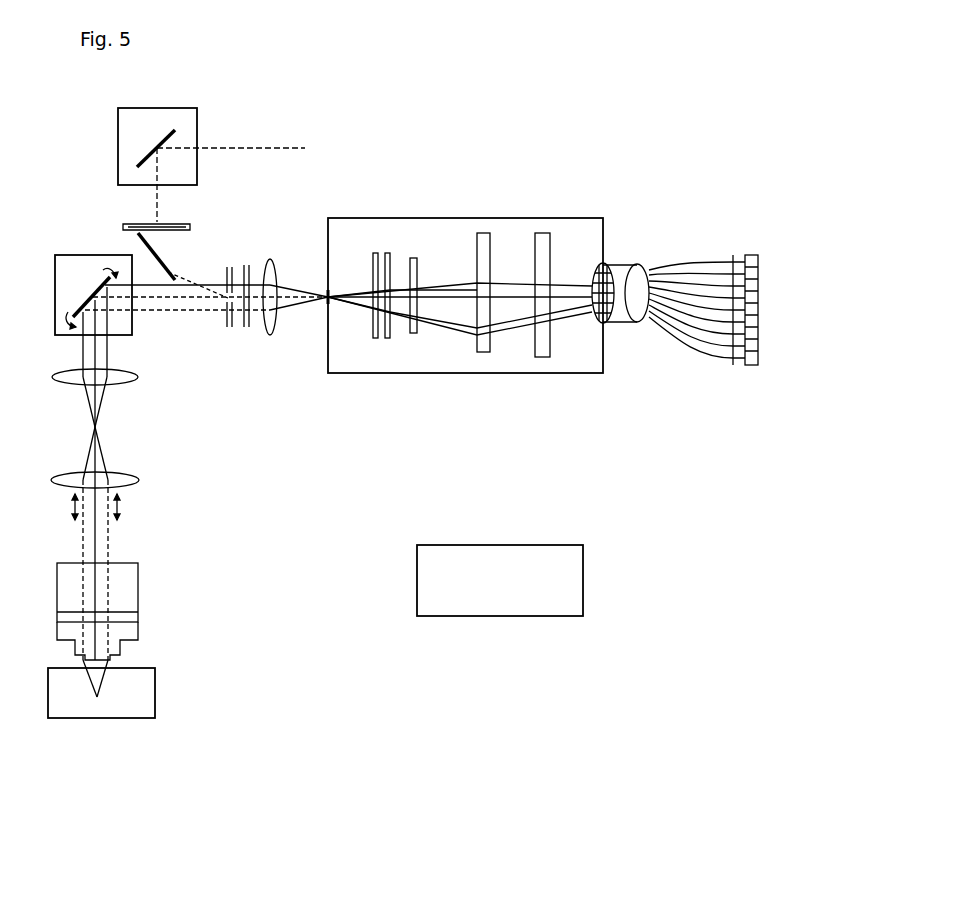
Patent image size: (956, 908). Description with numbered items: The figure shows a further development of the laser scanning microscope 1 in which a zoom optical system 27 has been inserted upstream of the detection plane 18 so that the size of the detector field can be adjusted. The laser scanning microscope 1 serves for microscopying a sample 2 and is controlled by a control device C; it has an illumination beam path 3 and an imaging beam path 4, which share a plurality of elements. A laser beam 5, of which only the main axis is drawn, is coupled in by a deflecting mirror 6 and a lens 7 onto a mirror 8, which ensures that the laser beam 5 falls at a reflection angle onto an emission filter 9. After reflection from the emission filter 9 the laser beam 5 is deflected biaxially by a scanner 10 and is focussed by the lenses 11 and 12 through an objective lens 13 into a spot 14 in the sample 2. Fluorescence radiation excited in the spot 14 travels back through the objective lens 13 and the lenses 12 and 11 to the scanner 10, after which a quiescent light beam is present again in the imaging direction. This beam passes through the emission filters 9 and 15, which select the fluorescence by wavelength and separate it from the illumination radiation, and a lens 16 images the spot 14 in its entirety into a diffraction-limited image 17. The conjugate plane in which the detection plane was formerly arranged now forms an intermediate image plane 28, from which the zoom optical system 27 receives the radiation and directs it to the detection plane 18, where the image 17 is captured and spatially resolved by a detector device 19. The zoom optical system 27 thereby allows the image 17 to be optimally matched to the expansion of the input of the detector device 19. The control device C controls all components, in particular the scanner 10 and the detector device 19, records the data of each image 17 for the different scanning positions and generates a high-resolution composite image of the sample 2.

The laser scanning microscope 1 is at (408, 860).
The sample 2 is at (150, 690).
The illumination beam path 3 is at (104, 213).
The imaging beam path 4 is at (326, 414).
The laser beam 5 is at (270, 148).
The deflecting mirror 6 is at (146, 108).
The lens 7 is at (190, 226).
The mirror 8 is at (135, 242).
The emission filter 9 is at (230, 330).
The scanner 10 is at (130, 325).
The lens 11 is at (140, 380).
The lens 12 is at (140, 482).
The objective lens 13 is at (140, 625).
The spot 14 is at (97, 697).
The emission filter 15 is at (246, 262).
The lens 16 is at (272, 258).
The image 17 is at (590, 275).
The detection plane 18 is at (612, 327).
The detector device 19 is at (664, 214).
The zoom optical system 27 is at (437, 218).
The intermediate image plane 28 is at (330, 290).
The control device C is at (572, 575).